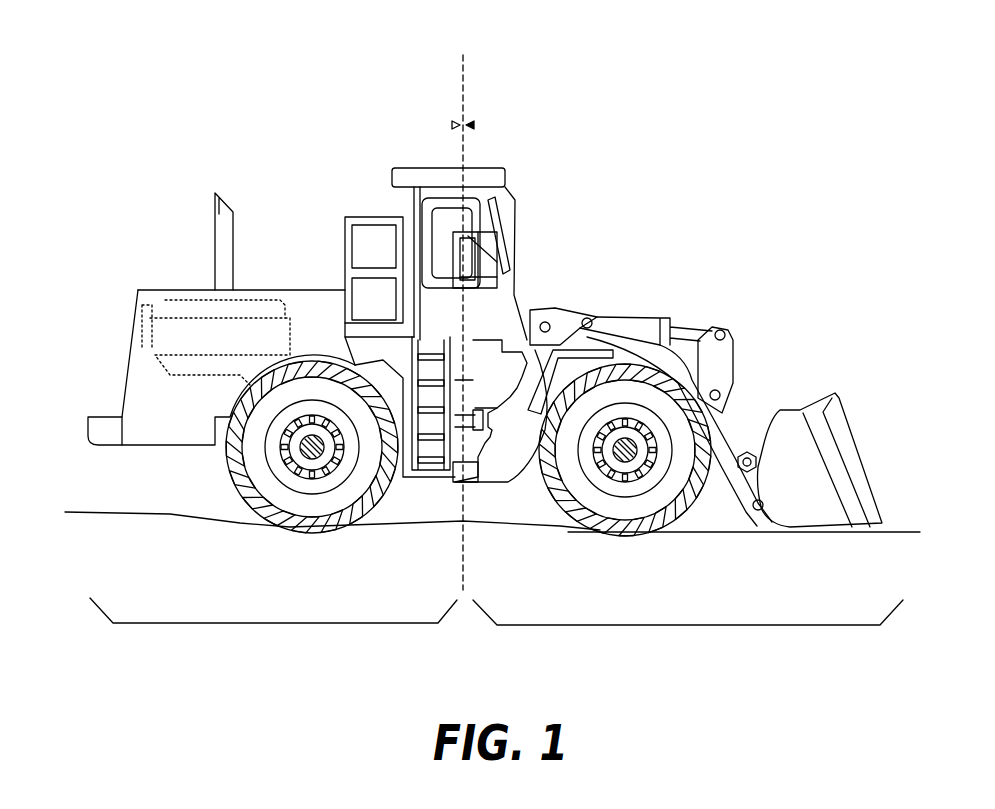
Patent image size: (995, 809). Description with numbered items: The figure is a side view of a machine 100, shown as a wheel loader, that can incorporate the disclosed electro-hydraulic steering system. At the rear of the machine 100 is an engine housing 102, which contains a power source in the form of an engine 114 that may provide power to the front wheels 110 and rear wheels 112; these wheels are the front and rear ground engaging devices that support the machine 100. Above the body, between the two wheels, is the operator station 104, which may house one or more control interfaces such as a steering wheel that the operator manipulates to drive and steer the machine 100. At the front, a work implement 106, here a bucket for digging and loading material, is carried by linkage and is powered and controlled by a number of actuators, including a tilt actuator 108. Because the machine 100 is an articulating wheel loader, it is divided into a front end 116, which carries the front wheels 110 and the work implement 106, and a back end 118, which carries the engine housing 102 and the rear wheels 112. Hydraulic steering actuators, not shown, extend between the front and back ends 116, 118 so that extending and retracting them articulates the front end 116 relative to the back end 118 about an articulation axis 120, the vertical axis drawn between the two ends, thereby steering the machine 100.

The machine 100 is at (518, 103).
The engine housing 102 is at (148, 290).
The operator station 104 is at (507, 213).
The work implement 106 is at (840, 398).
The tilt actuator 108 is at (663, 325).
The front wheels 110 is at (690, 506).
The rear wheels 112 is at (377, 510).
The engine 114 is at (127, 318).
The front end 116 is at (683, 625).
The back end 118 is at (253, 623).
The articulation axis 120 is at (462, 98).